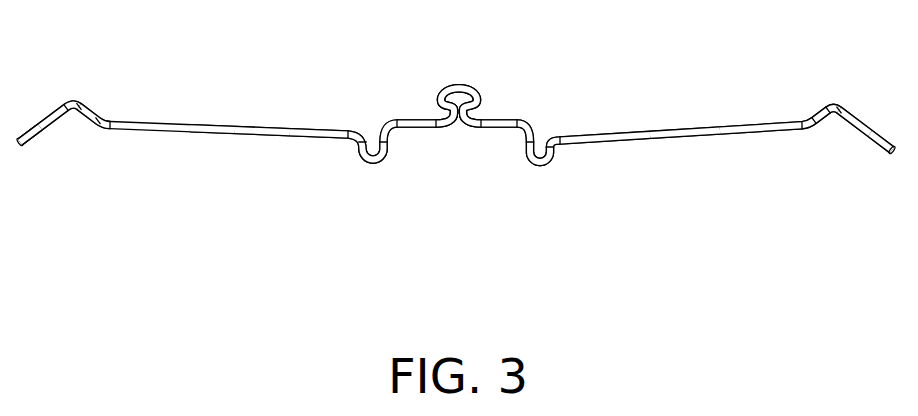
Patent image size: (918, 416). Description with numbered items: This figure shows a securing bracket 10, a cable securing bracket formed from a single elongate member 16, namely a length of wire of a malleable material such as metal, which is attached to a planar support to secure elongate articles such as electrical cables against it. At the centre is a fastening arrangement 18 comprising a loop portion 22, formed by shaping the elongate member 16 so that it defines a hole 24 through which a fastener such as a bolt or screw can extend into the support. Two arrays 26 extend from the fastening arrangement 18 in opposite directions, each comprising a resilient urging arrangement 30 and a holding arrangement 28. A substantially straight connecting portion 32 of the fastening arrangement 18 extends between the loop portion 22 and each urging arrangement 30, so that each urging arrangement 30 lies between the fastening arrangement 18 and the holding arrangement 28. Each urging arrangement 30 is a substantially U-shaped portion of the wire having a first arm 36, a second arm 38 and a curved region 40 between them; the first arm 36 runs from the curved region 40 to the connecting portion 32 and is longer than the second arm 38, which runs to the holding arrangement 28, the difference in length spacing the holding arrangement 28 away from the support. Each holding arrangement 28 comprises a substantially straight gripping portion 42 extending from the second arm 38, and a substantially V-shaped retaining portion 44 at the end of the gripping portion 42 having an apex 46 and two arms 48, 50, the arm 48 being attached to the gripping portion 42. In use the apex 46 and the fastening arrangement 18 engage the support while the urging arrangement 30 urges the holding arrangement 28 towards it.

The securing bracket 10 is at (152, 144).
The elongate member 16 is at (320, 151).
The fastening arrangement 18 is at (459, 76).
The loop portion 22 is at (444, 88).
The hole 24 is at (457, 119).
The arrays 26 is at (217, 117).
The holding arrangement 28 is at (29, 153).
The resilient urging arrangement 30 is at (373, 174).
The connecting portion 32 is at (412, 119).
The first arm 36 is at (389, 141).
The second arm 38 is at (349, 130).
The curved region 40 is at (372, 148).
The gripping portion 42 is at (248, 136).
The retaining portion 44 is at (38, 113).
The apex 46 is at (77, 100).
The arm 48 is at (95, 113).
The arm 50 is at (45, 129).